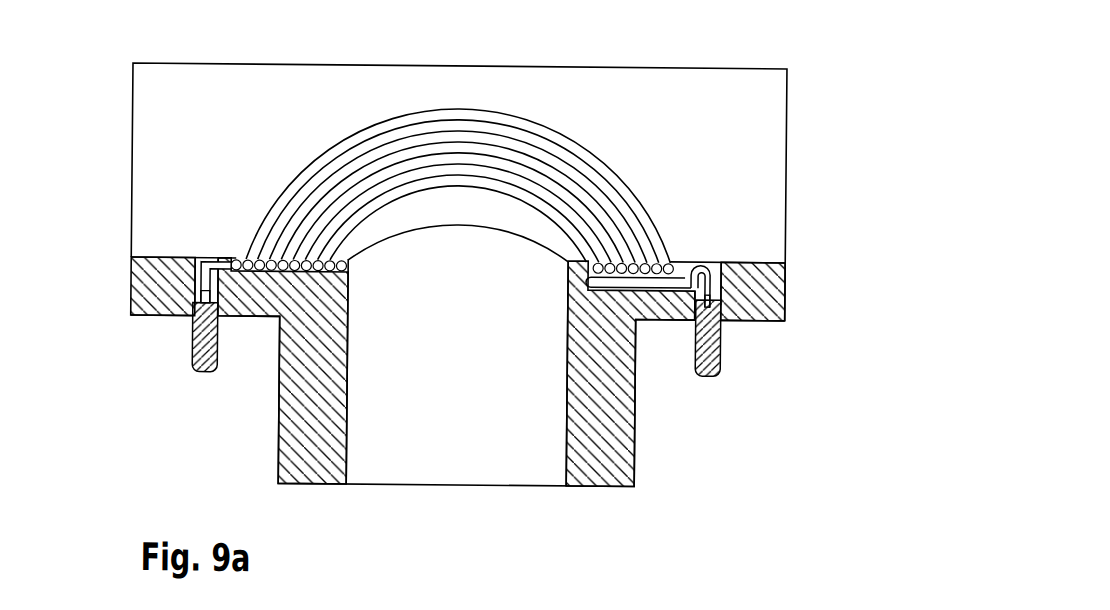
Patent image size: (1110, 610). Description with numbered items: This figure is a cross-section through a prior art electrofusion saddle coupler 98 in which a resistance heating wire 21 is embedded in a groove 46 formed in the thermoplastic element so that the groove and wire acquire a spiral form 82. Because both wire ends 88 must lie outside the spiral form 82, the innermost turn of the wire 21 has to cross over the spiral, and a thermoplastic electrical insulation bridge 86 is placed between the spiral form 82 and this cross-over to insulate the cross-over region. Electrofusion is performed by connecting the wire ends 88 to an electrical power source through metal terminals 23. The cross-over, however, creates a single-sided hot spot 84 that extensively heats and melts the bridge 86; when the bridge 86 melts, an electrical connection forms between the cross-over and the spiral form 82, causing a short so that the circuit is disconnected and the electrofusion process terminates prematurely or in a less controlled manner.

The wire 21 is at (200, 256).
The groove 46 is at (245, 267).
The spiral form 82 is at (643, 152).
The electrofusion saddle coupler 98 is at (752, 144).
The hot spot 84 is at (672, 228).
The electrical insulation bridge 86 is at (655, 277).
The wire ends 88 is at (197, 298).
The metal terminals 23 is at (197, 363).